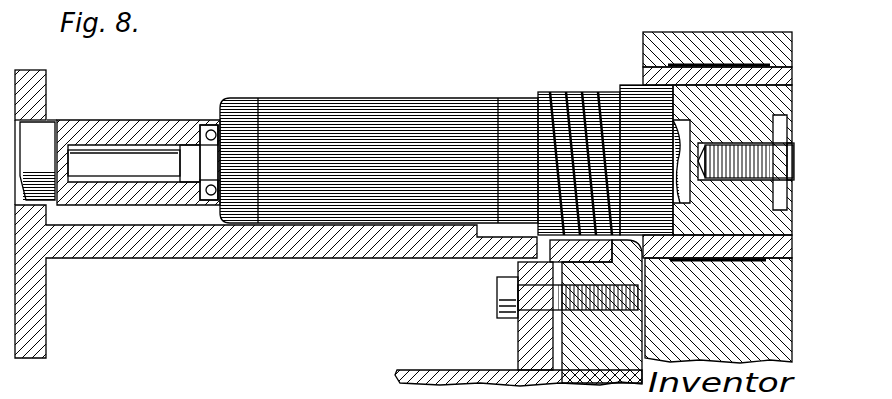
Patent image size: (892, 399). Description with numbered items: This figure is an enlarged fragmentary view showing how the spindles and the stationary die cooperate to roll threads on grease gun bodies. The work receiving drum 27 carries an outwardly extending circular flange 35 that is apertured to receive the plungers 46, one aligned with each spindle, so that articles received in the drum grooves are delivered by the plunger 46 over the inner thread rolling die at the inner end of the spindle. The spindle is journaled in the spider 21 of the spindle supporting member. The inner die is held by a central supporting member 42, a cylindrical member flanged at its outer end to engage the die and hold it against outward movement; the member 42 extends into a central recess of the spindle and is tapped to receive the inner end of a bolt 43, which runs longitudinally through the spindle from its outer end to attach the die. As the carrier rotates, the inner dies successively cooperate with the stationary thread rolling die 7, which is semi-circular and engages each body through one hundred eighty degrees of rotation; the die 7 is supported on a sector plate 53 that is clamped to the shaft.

The circular flange 35 is at (48, 84).
The plunger 46 is at (117, 120).
The work receiving drum 27 is at (306, 258).
The central supporting member 42 is at (668, 118).
The spider 21 is at (662, 35).
The bolt 43 is at (748, 118).
The stationary thread rolling die 7 is at (557, 247).
The sector plate 53 is at (518, 332).